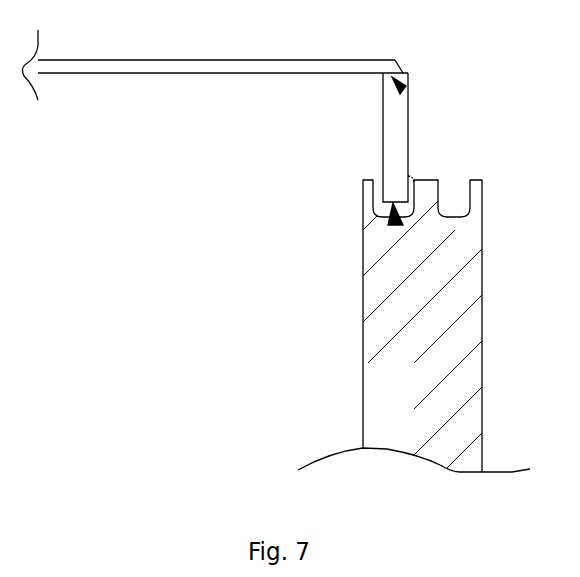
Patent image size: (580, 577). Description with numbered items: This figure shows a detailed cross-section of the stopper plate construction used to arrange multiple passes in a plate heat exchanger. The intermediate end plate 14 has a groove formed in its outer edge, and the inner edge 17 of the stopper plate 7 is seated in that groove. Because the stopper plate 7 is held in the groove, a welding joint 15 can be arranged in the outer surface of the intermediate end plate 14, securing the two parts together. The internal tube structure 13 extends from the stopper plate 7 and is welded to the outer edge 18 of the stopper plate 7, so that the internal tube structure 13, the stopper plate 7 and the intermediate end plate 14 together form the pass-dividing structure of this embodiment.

The stopper plate 7 is at (390, 123).
The internal tube structure 13 is at (238, 65).
The intermediate end plate 14 is at (442, 295).
The welding joint 15 is at (398, 67).
The inner edge 17 is at (393, 228).
The outer edge 18 is at (405, 89).